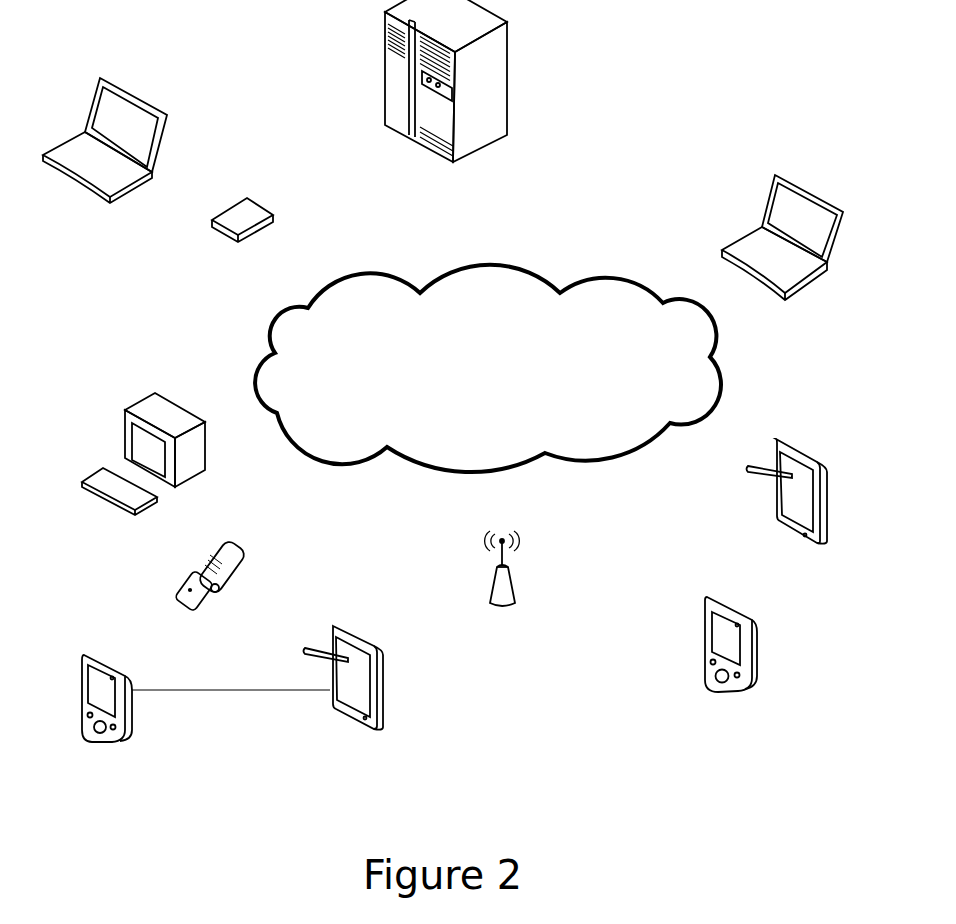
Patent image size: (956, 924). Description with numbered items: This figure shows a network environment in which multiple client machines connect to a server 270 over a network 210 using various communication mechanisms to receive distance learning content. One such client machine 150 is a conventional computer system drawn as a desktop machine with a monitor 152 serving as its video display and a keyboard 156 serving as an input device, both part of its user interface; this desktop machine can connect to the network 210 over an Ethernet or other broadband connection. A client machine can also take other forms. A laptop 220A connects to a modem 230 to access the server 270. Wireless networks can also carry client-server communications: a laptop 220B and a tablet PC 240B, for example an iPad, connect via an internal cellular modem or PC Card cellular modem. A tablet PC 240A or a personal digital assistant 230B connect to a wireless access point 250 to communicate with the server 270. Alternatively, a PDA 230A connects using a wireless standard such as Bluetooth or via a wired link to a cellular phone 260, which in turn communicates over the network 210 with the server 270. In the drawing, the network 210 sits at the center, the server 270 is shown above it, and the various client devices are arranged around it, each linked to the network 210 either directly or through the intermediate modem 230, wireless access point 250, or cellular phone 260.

The network 210 is at (488, 368).
The laptop 220A is at (238, 218).
The laptop 220B is at (648, 287).
The modem 230 is at (327, 287).
The PDA 230A is at (206, 714).
The Personal Digital Assistant (PDA) 230B is at (731, 658).
The tablet PC 240A is at (344, 693).
The tablet PC 240B is at (652, 448).
The wireless access point 250 is at (707, 607).
The cellular phone 260 is at (331, 466).
The server 270 is at (487, 263).
The client machine 150 is at (167, 468).
The monitor 152 is at (165, 440).
The keyboard 156 is at (119, 491).